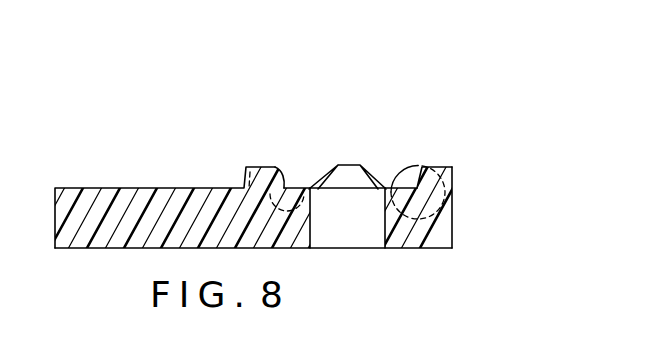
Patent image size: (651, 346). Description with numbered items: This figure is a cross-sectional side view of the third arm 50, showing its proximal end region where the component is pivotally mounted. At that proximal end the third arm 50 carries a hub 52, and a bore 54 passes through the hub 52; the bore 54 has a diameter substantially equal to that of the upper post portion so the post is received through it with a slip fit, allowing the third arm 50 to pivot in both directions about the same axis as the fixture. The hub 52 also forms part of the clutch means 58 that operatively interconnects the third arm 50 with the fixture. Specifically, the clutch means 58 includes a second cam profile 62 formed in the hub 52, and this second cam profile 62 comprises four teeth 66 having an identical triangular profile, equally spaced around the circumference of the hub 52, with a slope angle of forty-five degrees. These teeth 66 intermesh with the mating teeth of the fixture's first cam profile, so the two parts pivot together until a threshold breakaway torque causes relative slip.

The third arm 50 is at (311, 174).
The hub 52 is at (452, 213).
The bore 54 is at (314, 228).
The clutch means 58 is at (408, 160).
The second cam profile 62 is at (342, 120).
The teeth 66 is at (252, 172).